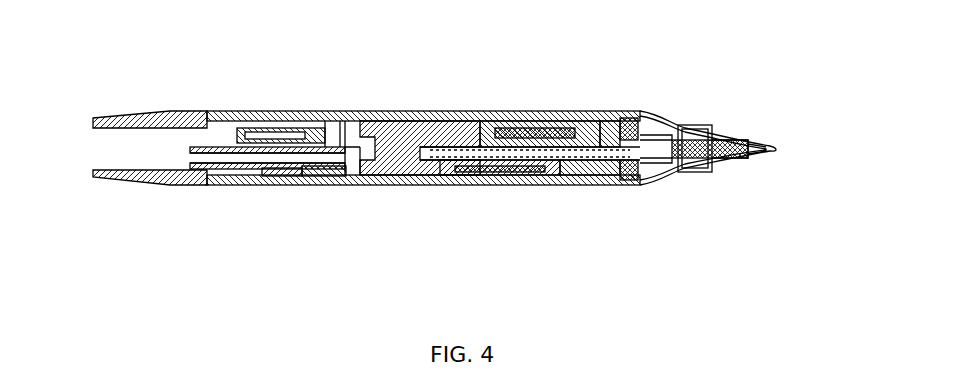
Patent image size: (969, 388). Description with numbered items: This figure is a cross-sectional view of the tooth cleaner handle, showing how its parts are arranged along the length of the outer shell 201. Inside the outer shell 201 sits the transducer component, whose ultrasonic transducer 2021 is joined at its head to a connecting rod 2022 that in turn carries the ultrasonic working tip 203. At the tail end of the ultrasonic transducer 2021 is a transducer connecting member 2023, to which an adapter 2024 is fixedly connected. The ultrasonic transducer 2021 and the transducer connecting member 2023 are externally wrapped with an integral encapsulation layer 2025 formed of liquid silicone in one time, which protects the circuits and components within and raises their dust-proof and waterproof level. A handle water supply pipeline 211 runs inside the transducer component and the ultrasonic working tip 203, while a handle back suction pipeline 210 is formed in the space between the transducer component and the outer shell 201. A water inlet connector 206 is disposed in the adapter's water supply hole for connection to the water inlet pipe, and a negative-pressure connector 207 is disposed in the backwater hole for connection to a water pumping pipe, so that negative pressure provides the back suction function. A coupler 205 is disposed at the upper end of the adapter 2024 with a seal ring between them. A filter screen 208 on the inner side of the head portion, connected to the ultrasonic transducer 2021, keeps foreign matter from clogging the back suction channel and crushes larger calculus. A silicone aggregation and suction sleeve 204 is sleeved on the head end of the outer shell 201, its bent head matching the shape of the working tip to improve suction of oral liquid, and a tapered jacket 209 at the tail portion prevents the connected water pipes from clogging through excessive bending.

The outer shell 201 is at (398, 185).
The ultrasonic working tip 203 is at (753, 147).
The silicone aggregation and suction sleeve 204 is at (718, 173).
The coupler 205 is at (275, 177).
The water inlet connector 206 is at (262, 135).
The negative-pressure connector 207 is at (228, 162).
The filter screen 208 is at (630, 173).
The jacket 209 is at (140, 123).
The handle back suction pipeline 210 is at (580, 177).
The handle water supply pipeline 211 is at (447, 152).
The ultrasonic transducer 2021 is at (530, 132).
The connecting rod 2022 is at (650, 140).
The transducer connecting member 2023 is at (405, 140).
The adapter 2024 is at (323, 172).
The integral encapsulation layer 2025 is at (478, 172).